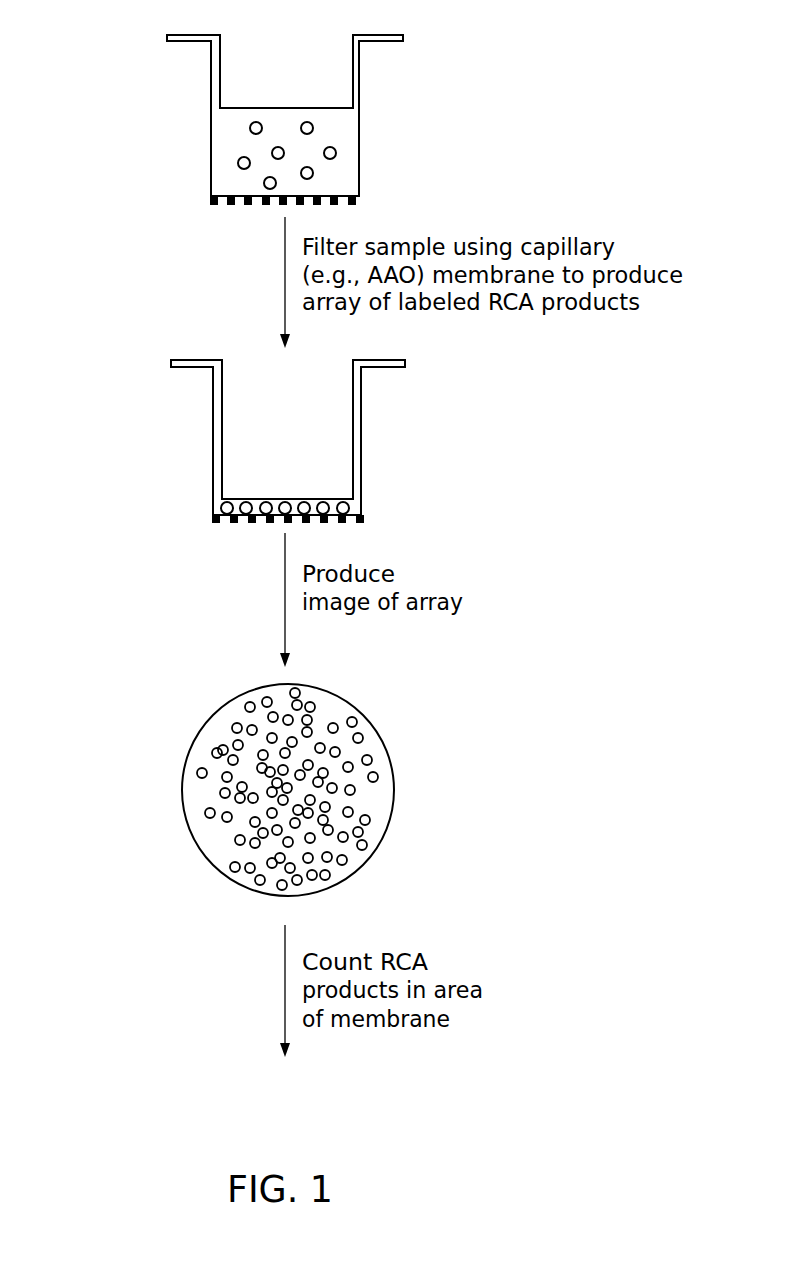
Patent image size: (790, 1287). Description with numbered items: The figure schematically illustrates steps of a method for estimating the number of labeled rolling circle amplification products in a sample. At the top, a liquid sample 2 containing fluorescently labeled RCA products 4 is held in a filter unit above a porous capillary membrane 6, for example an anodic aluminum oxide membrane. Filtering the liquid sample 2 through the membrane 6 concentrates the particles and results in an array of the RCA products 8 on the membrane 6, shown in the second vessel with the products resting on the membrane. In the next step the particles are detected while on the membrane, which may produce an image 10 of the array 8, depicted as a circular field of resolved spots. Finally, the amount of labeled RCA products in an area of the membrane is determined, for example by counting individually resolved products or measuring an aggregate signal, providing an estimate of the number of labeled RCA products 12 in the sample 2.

The liquid sample 2 is at (342, 123).
The labeled rolling circle amplification (RCA) products 4 is at (336, 152).
The porous capillary membrane 6 is at (360, 199).
The array of RCA products 8 is at (323, 499).
The image of array 10 is at (383, 702).
The estimate of the number of labeled RCA products 12 is at (517, 1092).